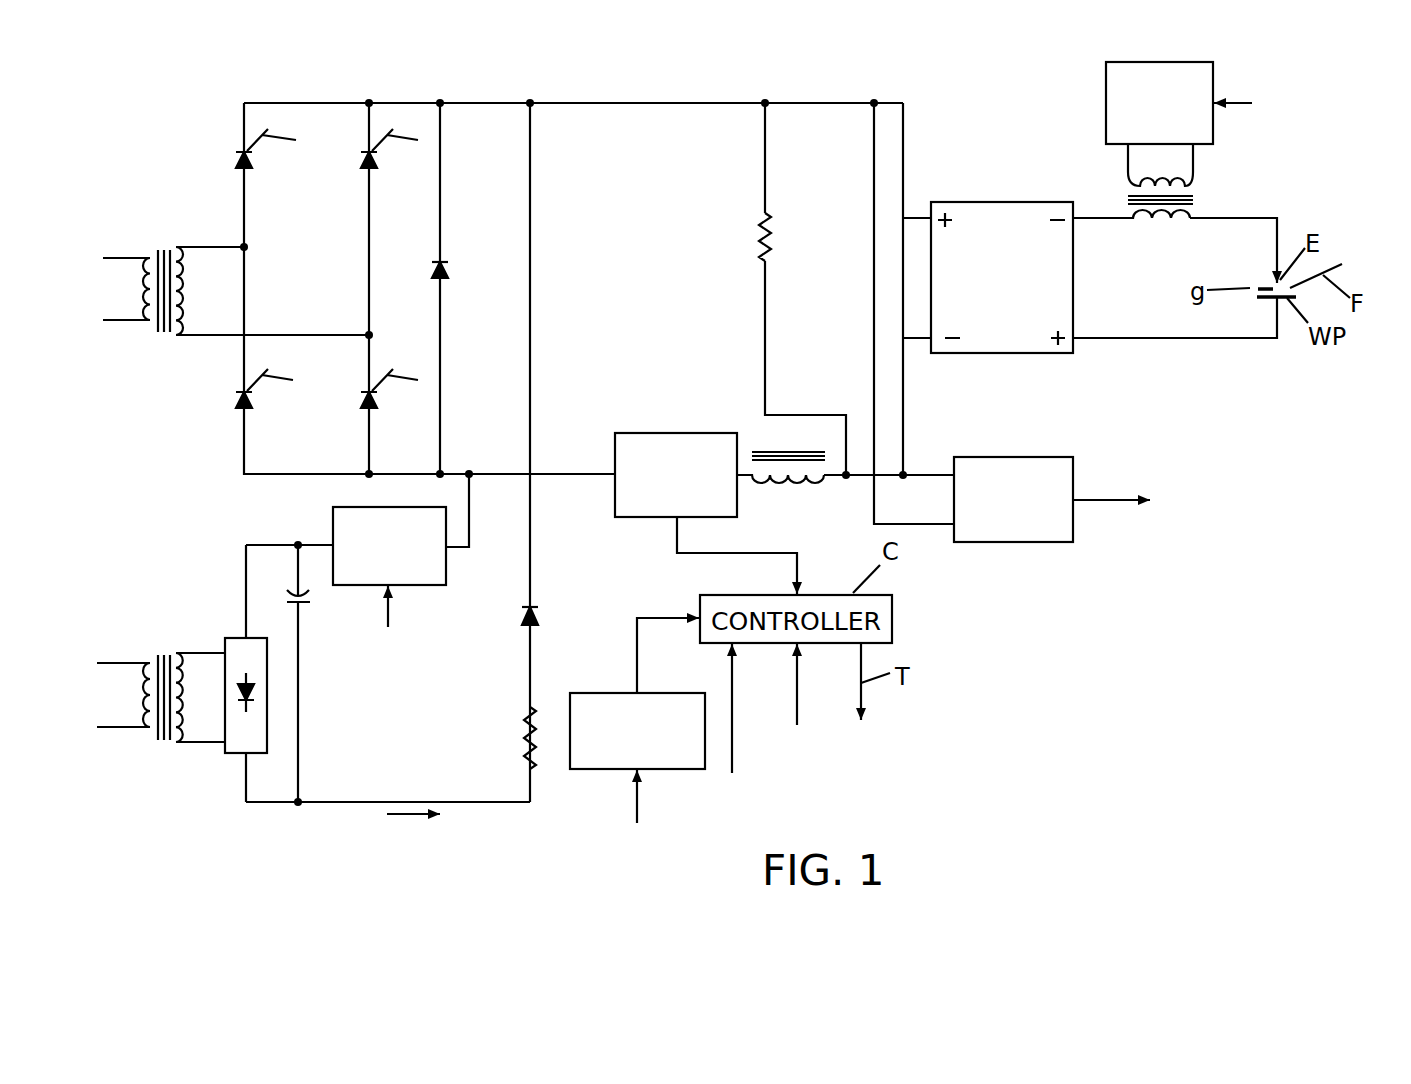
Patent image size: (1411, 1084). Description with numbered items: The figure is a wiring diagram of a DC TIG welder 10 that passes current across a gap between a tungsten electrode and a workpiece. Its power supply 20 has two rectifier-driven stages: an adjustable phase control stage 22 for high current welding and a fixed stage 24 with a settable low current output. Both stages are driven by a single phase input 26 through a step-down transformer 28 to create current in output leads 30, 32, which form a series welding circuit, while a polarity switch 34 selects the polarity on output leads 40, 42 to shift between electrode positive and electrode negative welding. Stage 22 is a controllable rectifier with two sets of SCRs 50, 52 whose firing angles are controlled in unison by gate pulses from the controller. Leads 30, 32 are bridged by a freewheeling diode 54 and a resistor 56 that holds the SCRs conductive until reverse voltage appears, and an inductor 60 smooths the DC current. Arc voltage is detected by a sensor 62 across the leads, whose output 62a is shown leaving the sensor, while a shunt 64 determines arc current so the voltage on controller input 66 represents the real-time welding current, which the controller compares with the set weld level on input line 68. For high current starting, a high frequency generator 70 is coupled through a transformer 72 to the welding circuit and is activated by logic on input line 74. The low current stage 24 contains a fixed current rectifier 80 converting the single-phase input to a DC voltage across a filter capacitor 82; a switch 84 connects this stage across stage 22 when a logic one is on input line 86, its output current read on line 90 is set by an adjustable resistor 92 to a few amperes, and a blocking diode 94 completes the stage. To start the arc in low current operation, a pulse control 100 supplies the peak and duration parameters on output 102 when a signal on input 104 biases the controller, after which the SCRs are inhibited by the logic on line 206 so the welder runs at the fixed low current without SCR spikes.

The DC TIG welder 10 is at (961, 118).
The power supply 20 is at (684, 90).
The adjustable phase control stage 22 is at (457, 88).
The fixed low current stage 24 is at (284, 540).
The single phase input 26 is at (146, 255).
The step-down transformer 28 is at (169, 244).
The output lead 30 is at (818, 100).
The output lead 32 is at (860, 480).
The polarity switch 34 is at (1000, 201).
The output lead 40 is at (1216, 222).
The output lead 42 is at (1197, 340).
The SCR 50 is at (236, 160).
The SCR 52 is at (362, 163).
The freewheeling diode 54 is at (450, 268).
The resistor 56 is at (760, 232).
The inductor 60 is at (770, 450).
The arc voltage sensor 62 is at (1013, 456).
The voltage feedback output 62a is at (1127, 502).
The shunt 64 is at (655, 432).
The controller input 66 is at (676, 533).
The input line 68 is at (800, 705).
The high frequency generator 70 is at (1105, 84).
The transformer 72 is at (1200, 198).
The input line 74 is at (1237, 104).
The fixed current rectifier 80 is at (233, 755).
The filter capacitor 82 is at (286, 597).
The switch 84 is at (446, 570).
The weld start input line 86 is at (385, 609).
The input line 90 is at (366, 800).
The adjustable resistor 92 is at (549, 731).
The blocking diode 94 is at (527, 625).
The pulse control 100 is at (612, 690).
The pulse control output 102 is at (650, 617).
The pulse control input 104 is at (635, 806).
The SCR inhibit logic line 206 is at (728, 678).